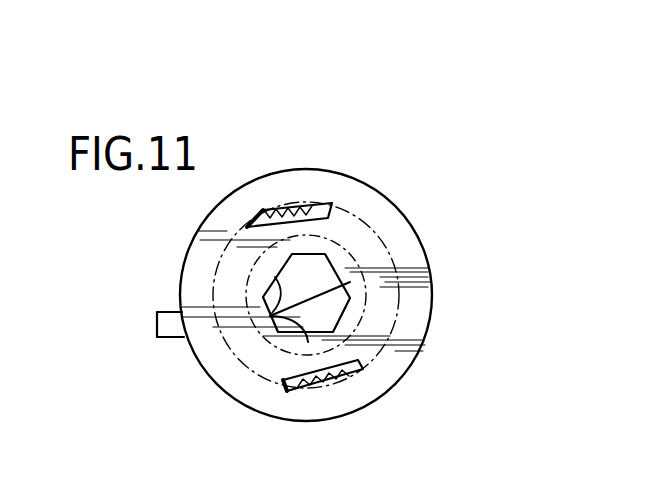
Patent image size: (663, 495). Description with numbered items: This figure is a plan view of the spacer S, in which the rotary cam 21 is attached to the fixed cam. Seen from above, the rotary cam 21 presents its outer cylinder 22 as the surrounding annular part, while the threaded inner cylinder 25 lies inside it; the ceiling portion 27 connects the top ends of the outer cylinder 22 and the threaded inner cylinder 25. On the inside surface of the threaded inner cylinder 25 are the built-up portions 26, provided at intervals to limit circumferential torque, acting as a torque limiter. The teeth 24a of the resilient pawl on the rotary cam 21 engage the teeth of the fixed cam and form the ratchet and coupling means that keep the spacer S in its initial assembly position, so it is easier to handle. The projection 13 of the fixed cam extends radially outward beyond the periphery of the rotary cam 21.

The projection 13 is at (158, 323).
The rotary cam 21 is at (383, 187).
The outer cylinder 22 is at (405, 246).
The teeth 24a is at (283, 203).
The threaded inner cylinder 25 is at (268, 276).
The built-up portions 26 is at (270, 316).
The ceiling portion 27 is at (378, 290).
The spacer S is at (427, 360).